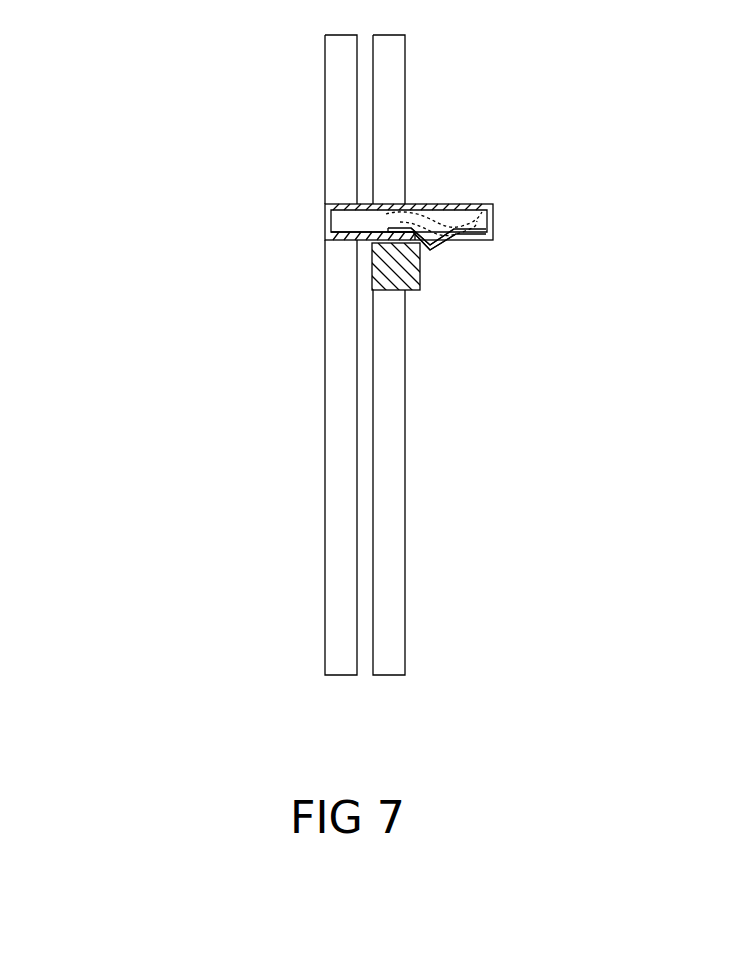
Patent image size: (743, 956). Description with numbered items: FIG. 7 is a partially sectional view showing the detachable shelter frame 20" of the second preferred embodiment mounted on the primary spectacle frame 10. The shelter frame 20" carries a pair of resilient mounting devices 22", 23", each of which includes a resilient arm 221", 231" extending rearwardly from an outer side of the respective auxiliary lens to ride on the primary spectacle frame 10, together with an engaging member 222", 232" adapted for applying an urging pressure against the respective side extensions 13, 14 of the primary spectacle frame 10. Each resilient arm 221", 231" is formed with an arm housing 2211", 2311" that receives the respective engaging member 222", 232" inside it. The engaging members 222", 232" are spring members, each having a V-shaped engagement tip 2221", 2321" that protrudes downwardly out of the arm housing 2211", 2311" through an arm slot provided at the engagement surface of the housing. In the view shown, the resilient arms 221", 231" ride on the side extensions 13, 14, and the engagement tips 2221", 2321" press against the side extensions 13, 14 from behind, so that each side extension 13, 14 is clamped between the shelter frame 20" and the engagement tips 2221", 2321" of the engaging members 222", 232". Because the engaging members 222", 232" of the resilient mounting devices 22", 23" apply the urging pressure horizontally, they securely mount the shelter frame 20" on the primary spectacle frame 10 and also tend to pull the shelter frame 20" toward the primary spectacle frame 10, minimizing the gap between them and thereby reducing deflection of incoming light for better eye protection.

The primary spectacle frame 10 is at (477, 515).
The shelter frame 20 is at (303, 475).
The side extension 13 is at (342, 237).
The side extension 14 is at (372, 260).
The resilient mounting device 22 is at (519, 201).
The resilient mounting device 23 is at (519, 201).
The resilient arm 221 is at (486, 189).
The resilient arm 231 is at (484, 200).
The arm housing 2211 is at (541, 166).
The arm housing 2311 is at (432, 203).
The engaging member 222 is at (539, 295).
The engaging member 232 is at (539, 295).
The V-shaped engagement tip 2221 is at (535, 295).
The V-shaped engagement tip 2321 is at (433, 250).